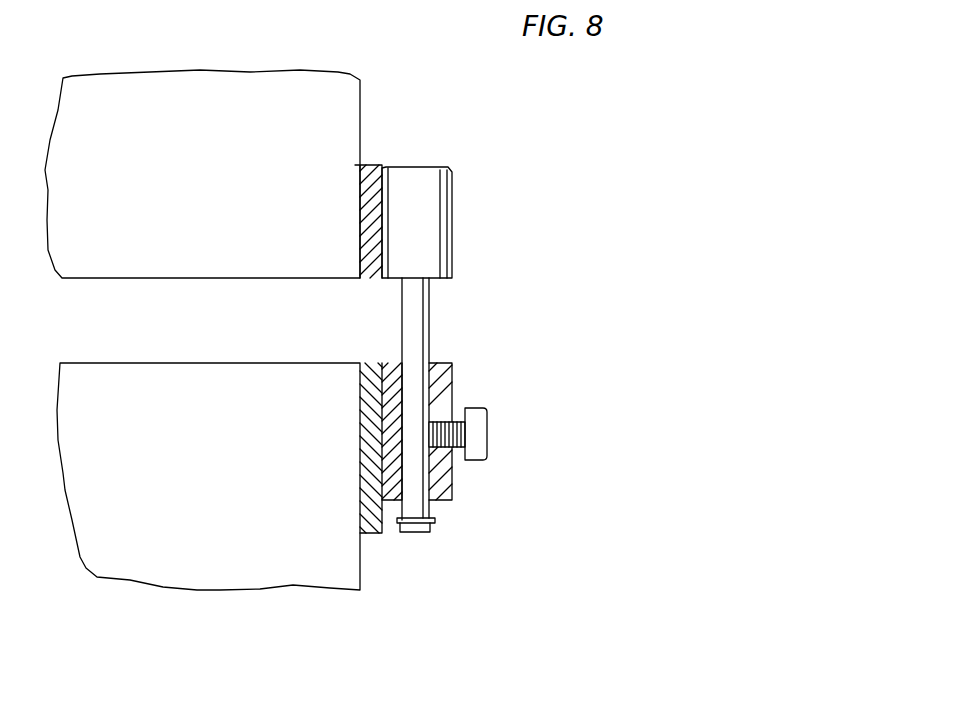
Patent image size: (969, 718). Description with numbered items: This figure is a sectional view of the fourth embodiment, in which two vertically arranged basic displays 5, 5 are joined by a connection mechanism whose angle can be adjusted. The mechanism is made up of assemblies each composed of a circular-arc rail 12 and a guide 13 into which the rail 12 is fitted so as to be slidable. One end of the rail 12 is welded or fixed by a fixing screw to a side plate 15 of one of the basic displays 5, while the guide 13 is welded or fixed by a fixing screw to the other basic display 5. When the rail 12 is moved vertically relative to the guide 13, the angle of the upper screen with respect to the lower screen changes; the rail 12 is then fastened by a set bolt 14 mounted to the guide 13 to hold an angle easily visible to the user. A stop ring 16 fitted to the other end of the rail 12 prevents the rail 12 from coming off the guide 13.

The basic display 5 is at (167, 123).
The circular-arc rail 12 is at (428, 229).
The guide 13 is at (443, 388).
The set bolt 14 is at (480, 436).
The side plate 15 is at (370, 172).
The stop ring 16 is at (432, 519).